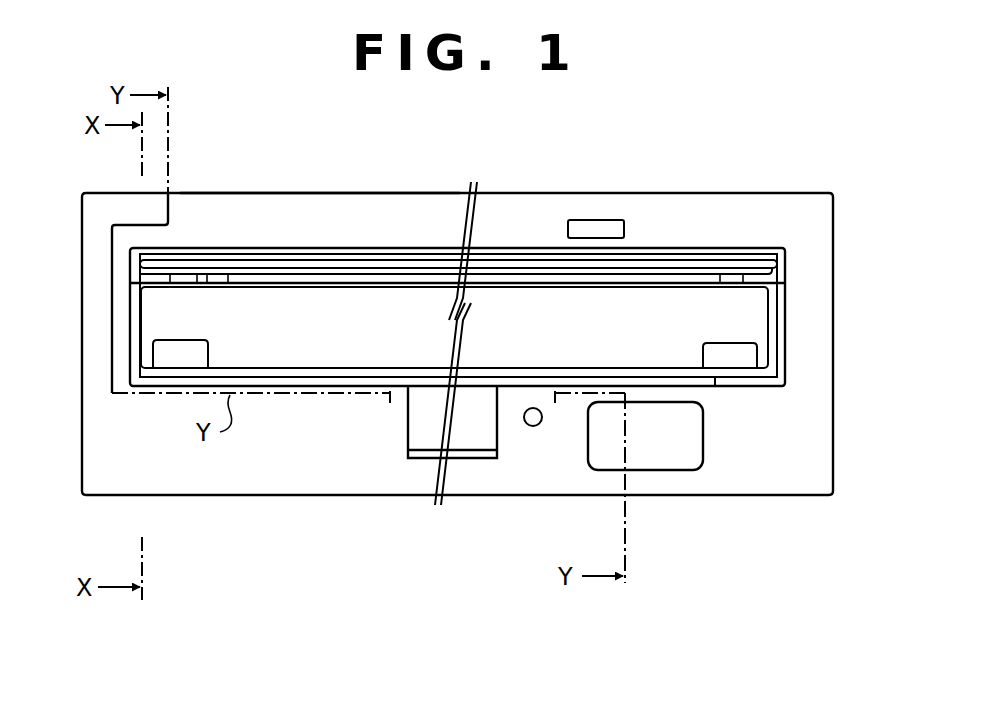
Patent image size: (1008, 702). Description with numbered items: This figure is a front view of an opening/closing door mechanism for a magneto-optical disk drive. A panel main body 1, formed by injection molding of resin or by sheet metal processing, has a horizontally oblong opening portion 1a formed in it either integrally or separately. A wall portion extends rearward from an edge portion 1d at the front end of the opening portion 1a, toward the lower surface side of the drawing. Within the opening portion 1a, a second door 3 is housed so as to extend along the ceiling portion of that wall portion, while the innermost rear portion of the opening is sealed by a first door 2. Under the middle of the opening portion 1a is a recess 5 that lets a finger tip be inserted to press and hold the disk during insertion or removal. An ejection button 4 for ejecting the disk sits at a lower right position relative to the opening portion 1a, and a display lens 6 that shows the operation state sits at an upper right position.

The panel main body 1 is at (662, 220).
The opening portion 1a is at (513, 217).
The edge portion 1d is at (715, 387).
The first door 2 is at (735, 337).
The second door 3 is at (692, 260).
The ejection button 4 is at (655, 438).
The recess 5 is at (475, 430).
The display lens 6 is at (595, 227).